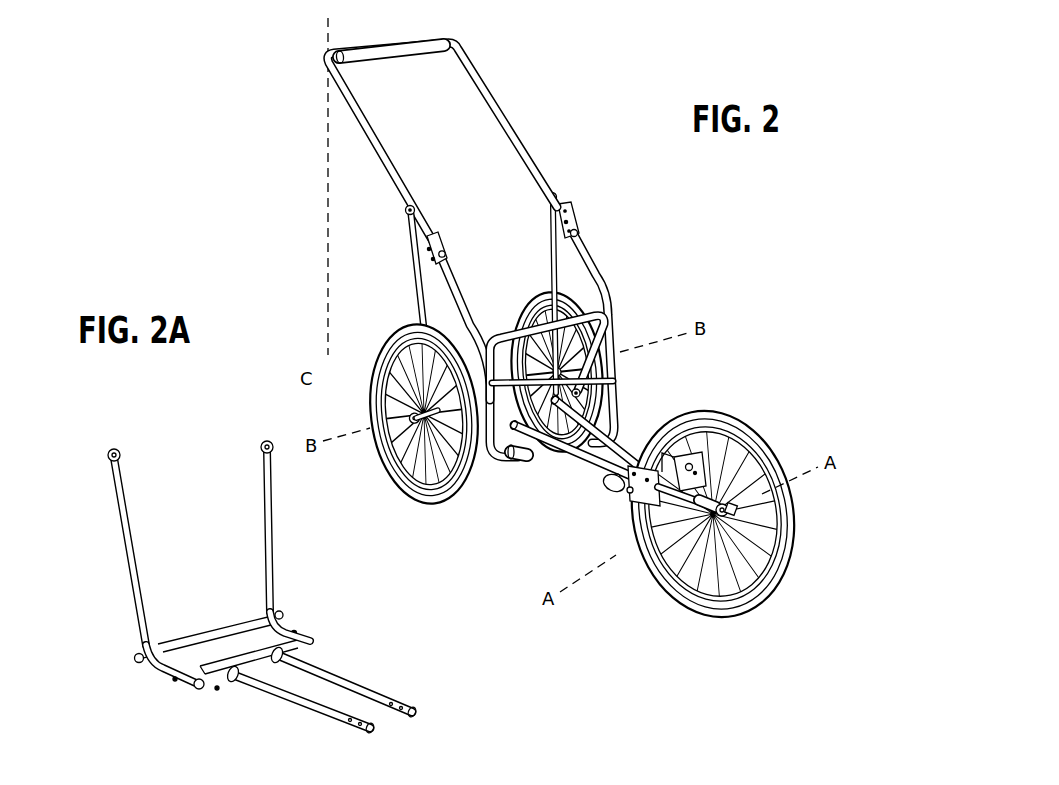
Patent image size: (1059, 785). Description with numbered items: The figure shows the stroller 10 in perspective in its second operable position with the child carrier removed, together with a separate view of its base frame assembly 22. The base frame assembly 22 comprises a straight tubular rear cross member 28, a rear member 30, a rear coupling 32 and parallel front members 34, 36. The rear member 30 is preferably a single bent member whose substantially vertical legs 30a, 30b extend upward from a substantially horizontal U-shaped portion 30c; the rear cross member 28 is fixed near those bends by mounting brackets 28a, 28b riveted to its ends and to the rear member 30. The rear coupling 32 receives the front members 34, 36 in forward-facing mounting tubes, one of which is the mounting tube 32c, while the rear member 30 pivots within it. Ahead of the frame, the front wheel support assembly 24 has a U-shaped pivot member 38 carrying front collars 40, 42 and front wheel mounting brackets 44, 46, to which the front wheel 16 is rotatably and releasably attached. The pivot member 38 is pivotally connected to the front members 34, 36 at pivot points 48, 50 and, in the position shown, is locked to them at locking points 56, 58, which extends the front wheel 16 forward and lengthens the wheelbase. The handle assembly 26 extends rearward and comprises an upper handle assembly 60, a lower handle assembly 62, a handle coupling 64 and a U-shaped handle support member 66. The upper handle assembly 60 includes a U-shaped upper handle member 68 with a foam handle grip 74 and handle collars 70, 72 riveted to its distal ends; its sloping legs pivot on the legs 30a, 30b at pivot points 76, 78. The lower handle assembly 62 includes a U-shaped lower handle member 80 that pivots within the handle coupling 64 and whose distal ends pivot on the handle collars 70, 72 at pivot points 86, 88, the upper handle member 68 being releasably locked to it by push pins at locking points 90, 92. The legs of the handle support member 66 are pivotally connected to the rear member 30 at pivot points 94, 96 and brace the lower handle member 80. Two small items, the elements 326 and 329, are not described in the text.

In FIG. 2, the stroller 10 is at (750, 245).
In FIG. 2, the front wheel 16 is at (720, 516).
In FIG. 2, the base frame assembly 22 is at (483, 452).
In FIG. 2A, the base frame assembly 22 is at (243, 566).
In FIG. 2, the front wheel support assembly 24 is at (645, 471).
In FIG. 2, the handle assembly 26 is at (570, 200).
In FIG. 2A, the rear cross member 28 is at (217, 617).
In FIG. 2A, the mounting bracket 28a is at (136, 656).
In FIG. 2A, the mounting bracket 28b is at (277, 611).
In FIG. 2A, the rear member 30 is at (215, 594).
In FIG. 2A, the vertical leg 30a is at (126, 531).
In FIG. 2A, the vertical leg 30b is at (271, 510).
In FIG. 2A, the U-shaped portion 30c is at (297, 617).
In FIG. 2A, the rear coupling 32 is at (203, 689).
In FIG. 2A, the mounting tube 32c is at (286, 652).
In FIG. 2, the front member 34 is at (583, 460).
In FIG. 2A, the front member 34 is at (300, 707).
In FIG. 2, the front member 36 is at (616, 437).
In FIG. 2A, the front member 36 is at (348, 679).
In FIG. 2, the pivot member 38 is at (604, 486).
In FIG. 2, the front collar 40 is at (640, 503).
In FIG. 2, the front collar 42 is at (704, 463).
In FIG. 2, the front wheel mounting bracket 44 is at (673, 580).
In FIG. 2, the front wheel mounting bracket 46 is at (736, 487).
In FIG. 2, the pivot point 48 is at (631, 496).
In FIG. 2, the pivot point 50 is at (703, 452).
In FIG. 2, the locking point 56 is at (616, 480).
In FIG. 2, the locking point 58 is at (689, 450).
In FIG. 2, the upper handle assembly 60 is at (465, 134).
In FIG. 2, the lower handle assembly 62 is at (635, 330).
In FIG. 2, the handle coupling 64 is at (524, 462).
In FIG. 2, the handle support member 66 is at (604, 318).
In FIG. 2, the upper handle member 68 is at (478, 80).
In FIG. 2, the handle collar 70 is at (415, 232).
In FIG. 2, the handle collar 72 is at (606, 210).
In FIG. 2, the handle grip 74 is at (434, 44).
In FIG. 2, the pivot point 76 is at (406, 209).
In FIG. 2, the pivot point 78 is at (551, 191).
In FIG. 2, the lower handle member 80 is at (604, 287).
In FIG. 2, the pivot point 86 is at (426, 249).
In FIG. 2, the pivot point 88 is at (574, 222).
In FIG. 2, the locking point 90 is at (430, 258).
In FIG. 2, the locking point 92 is at (579, 233).
In FIG. 2A, the pivot point 94 is at (174, 684).
In FIG. 2A, the pivot point 96 is at (298, 631).
In FIG. 2A, the end cap 326 is at (230, 683).
In FIG. 2A, the pin 329 is at (217, 692).